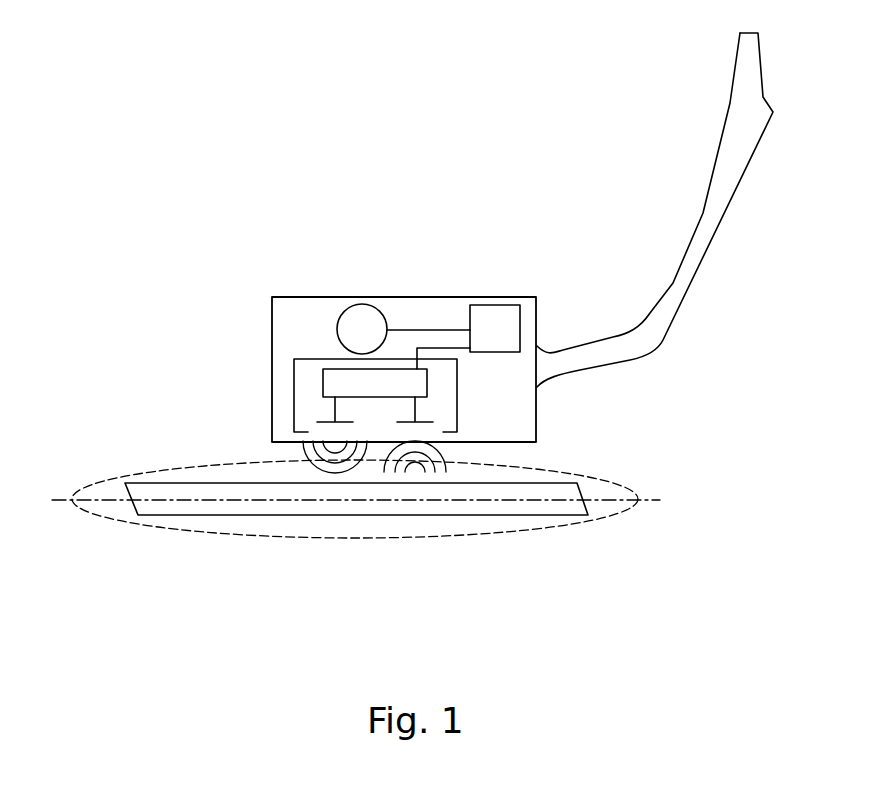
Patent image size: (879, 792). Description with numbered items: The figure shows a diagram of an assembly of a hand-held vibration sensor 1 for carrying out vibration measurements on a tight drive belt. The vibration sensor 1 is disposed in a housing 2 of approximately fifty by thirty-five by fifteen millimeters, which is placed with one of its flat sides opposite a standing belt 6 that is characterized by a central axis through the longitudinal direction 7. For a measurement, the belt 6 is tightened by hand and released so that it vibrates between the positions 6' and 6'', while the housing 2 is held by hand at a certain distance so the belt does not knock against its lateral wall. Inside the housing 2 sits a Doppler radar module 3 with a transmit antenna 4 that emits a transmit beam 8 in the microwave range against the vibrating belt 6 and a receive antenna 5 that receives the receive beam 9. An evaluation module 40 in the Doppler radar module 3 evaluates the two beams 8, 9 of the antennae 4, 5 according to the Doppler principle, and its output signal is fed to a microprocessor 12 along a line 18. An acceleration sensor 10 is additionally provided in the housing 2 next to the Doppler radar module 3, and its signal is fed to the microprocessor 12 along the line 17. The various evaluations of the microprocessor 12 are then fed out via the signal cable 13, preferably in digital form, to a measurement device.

The vibration sensor 1 is at (405, 307).
The housing 2 is at (272, 330).
The Doppler radar module 3 is at (310, 373).
The transmit antenna 4 is at (320, 423).
The receive antenna 5 is at (428, 415).
The belt 6 is at (356, 552).
The belt vibration position 6' is at (355, 479).
The belt vibration position 6'' is at (512, 564).
The longitudinal direction 7 is at (390, 500).
The transmit beam 8 is at (335, 470).
The receive beam 9 is at (412, 470).
The acceleration sensor 10 is at (357, 304).
The microprocessor 12 is at (497, 327).
The signal cable 13 is at (702, 217).
The line 17 is at (420, 328).
The line 18 is at (448, 348).
The evaluation module 40 is at (400, 380).